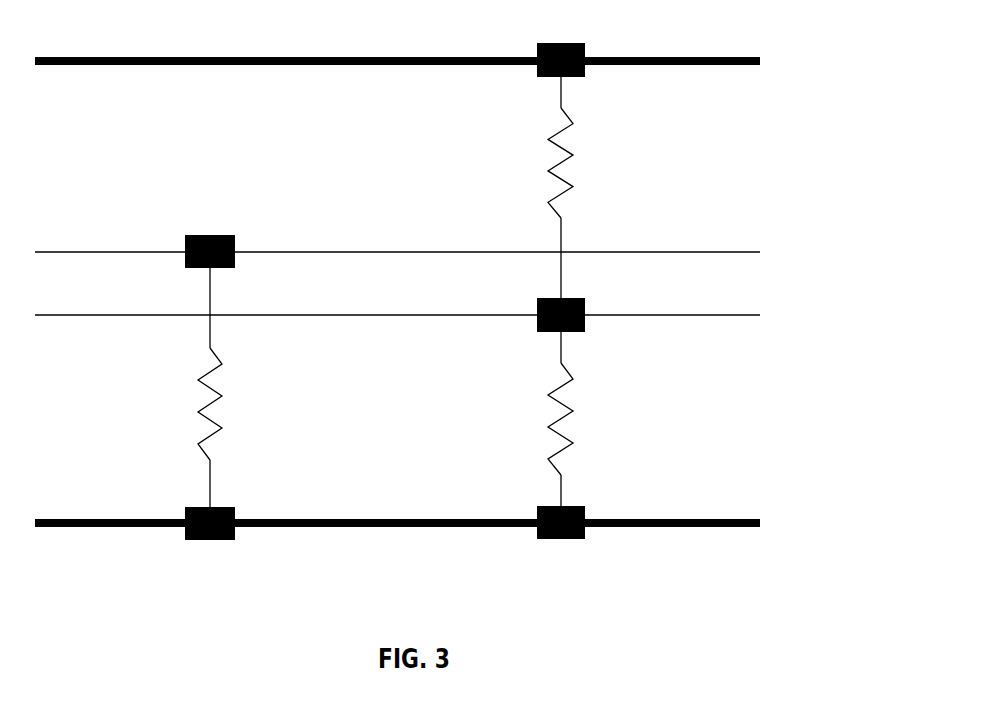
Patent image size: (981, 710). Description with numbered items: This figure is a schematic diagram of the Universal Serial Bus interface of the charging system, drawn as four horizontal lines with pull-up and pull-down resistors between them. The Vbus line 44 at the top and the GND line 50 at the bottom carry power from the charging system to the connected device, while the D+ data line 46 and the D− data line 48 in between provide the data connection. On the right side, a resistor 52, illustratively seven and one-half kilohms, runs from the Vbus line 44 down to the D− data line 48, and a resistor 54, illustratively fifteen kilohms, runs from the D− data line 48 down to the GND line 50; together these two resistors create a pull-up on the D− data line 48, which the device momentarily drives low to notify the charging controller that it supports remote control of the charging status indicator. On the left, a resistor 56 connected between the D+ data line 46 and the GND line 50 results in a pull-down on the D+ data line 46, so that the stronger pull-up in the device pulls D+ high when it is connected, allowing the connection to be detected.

The Vbus line 44 is at (112, 57).
The D+ data line 46 is at (111, 252).
The D− data line 48 is at (111, 315).
The GND line 50 is at (111, 519).
The resistor 52 is at (516, 171).
The resistor 54 is at (516, 426).
The resistor 56 is at (258, 395).